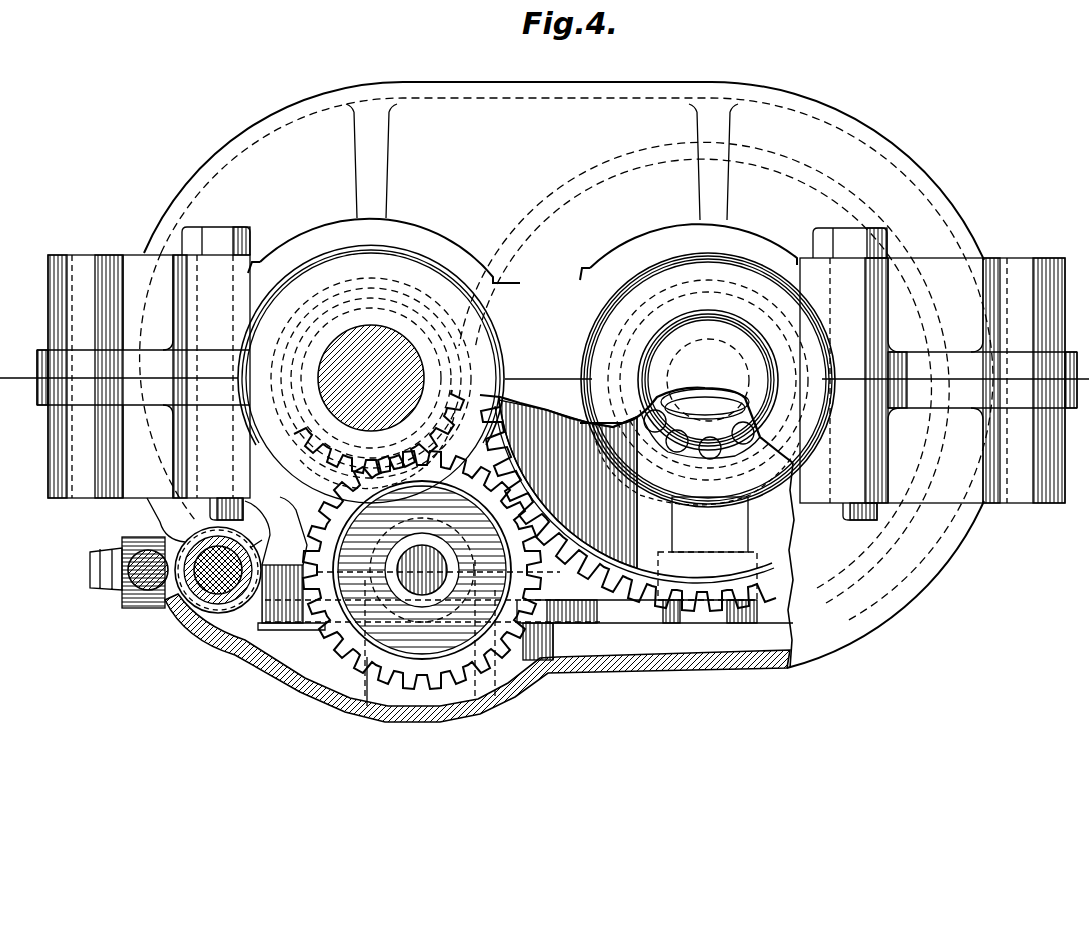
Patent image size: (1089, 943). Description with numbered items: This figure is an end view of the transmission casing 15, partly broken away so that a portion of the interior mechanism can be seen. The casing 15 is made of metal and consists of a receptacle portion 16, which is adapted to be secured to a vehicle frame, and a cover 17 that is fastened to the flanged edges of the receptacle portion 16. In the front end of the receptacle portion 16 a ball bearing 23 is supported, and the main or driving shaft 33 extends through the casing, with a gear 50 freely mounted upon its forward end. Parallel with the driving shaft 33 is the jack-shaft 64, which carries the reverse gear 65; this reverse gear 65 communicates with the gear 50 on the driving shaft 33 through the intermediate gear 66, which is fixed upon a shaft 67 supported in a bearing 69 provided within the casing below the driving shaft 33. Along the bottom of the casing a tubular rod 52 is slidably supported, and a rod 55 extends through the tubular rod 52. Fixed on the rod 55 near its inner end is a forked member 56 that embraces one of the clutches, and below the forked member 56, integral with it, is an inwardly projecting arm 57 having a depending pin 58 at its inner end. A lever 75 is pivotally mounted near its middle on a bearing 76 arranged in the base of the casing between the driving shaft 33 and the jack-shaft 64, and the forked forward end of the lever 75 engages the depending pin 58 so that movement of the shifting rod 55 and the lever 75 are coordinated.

The casing 15 is at (143, 316).
The receptacle portion 16 is at (689, 676).
The cover 17 is at (486, 146).
The ball bearing 23 is at (742, 412).
The main or driving shaft 33 is at (384, 342).
The gear 50 is at (448, 442).
The tubular rod 52 is at (208, 602).
The rod 55 is at (218, 615).
The forked member 56 is at (231, 531).
The inwardly projecting arm 57 is at (282, 577).
The depending pin 58 is at (306, 630).
The jack-shaft 64 is at (690, 446).
The reverse gear 65 is at (612, 176).
The intermediate gear 66 is at (463, 548).
The shaft 67 is at (422, 570).
The bearing 69 is at (432, 577).
The lever 75 is at (565, 608).
The bearing 76 is at (556, 645).